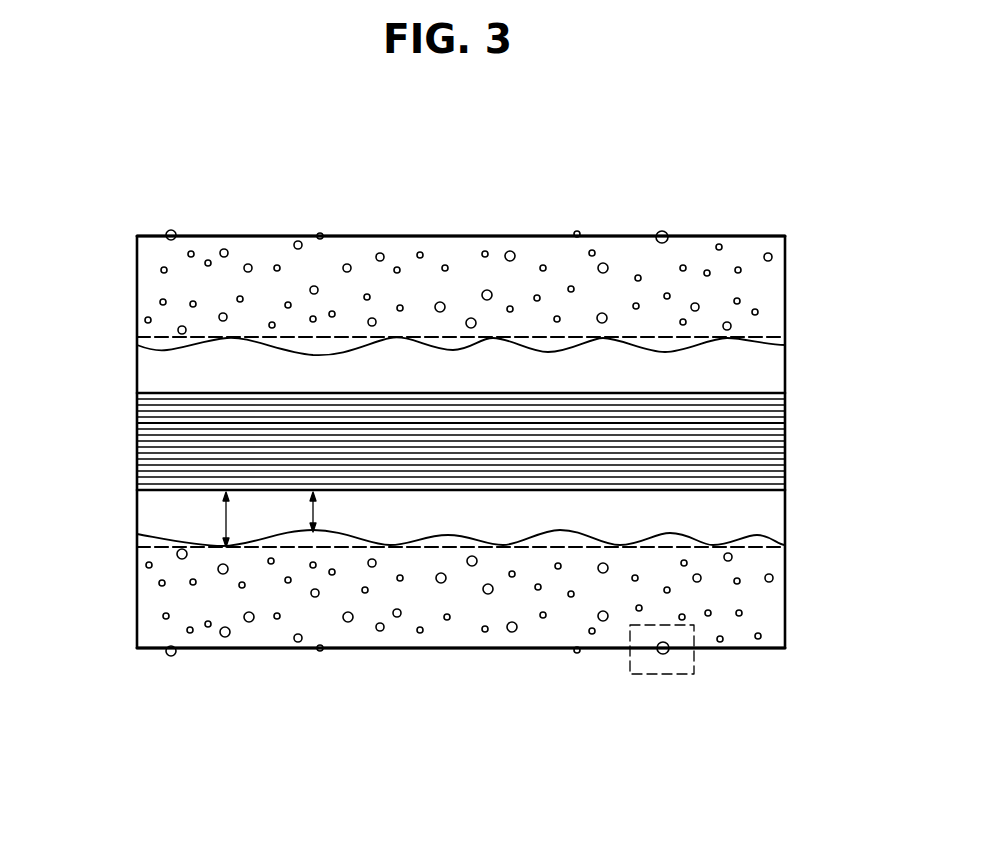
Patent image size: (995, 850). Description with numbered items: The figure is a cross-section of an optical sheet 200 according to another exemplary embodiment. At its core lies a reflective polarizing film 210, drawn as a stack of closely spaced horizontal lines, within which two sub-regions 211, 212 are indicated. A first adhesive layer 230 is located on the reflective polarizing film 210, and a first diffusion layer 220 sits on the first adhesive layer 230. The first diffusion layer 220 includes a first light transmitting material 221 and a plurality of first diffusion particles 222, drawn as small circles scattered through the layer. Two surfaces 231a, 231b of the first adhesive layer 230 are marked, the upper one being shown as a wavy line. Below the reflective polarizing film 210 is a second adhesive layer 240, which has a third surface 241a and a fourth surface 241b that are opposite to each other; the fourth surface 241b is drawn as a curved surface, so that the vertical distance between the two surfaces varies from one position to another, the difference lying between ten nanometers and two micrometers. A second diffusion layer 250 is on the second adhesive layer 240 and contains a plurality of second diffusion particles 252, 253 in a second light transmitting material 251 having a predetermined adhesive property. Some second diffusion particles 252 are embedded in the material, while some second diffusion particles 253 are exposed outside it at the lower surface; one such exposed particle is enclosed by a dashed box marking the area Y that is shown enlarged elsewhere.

The optical sheet 200 is at (200, 155).
The reflective polarizing film 210 is at (122, 396).
The first layer of 210 211 is at (785, 418).
The second layer of 210 212 is at (785, 425).
The first diffusion layer 220 is at (122, 240).
The first light transmitting material 221 is at (770, 296).
The first diffusion particles 222 is at (772, 257).
The first adhesive layer 230 is at (770, 367).
The first surface of adhesive layer 230 231a is at (137, 356).
The second surface of adhesive layer 230 231b is at (137, 392).
The second adhesive layer 240 is at (770, 514).
The third surface 241a is at (137, 493).
The fourth surface 241b is at (137, 536).
The second diffusion layer 250 is at (122, 552).
The second light transmitting material 251 is at (770, 614).
The second diffusion particles 252 is at (773, 578).
The second diffusion particles 253 is at (665, 653).
The area Y is at (661, 676).